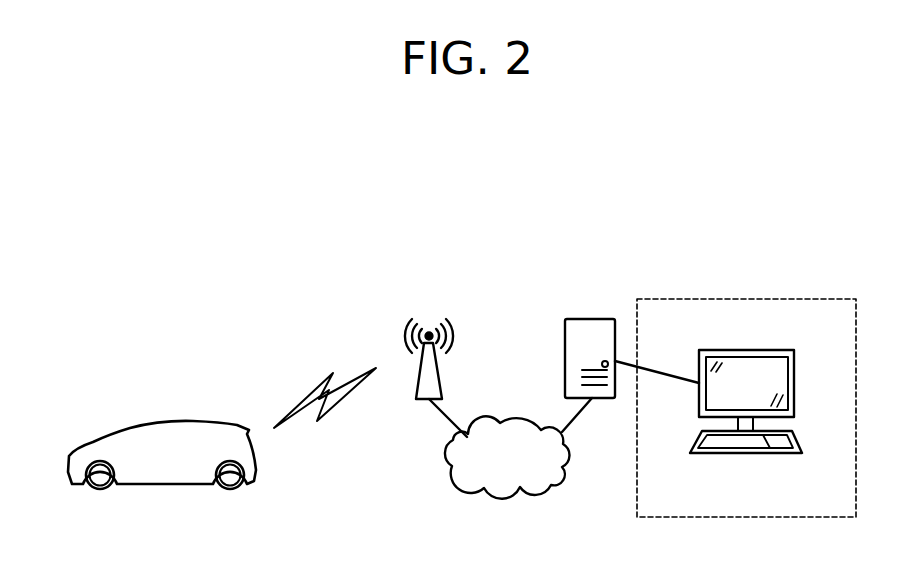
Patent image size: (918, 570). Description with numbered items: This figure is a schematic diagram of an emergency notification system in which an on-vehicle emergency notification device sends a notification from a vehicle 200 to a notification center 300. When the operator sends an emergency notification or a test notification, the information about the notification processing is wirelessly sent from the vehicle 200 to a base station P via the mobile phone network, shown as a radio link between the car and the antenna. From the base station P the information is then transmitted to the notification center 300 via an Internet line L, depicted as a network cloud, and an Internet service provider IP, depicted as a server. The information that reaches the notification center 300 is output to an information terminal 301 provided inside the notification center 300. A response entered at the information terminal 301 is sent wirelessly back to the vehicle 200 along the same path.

The vehicle 200 is at (203, 420).
The notification center 300 is at (817, 299).
The information terminal 301 is at (794, 368).
The base station P is at (439, 377).
The Internet service provider IP is at (587, 319).
The Internet line L is at (550, 485).